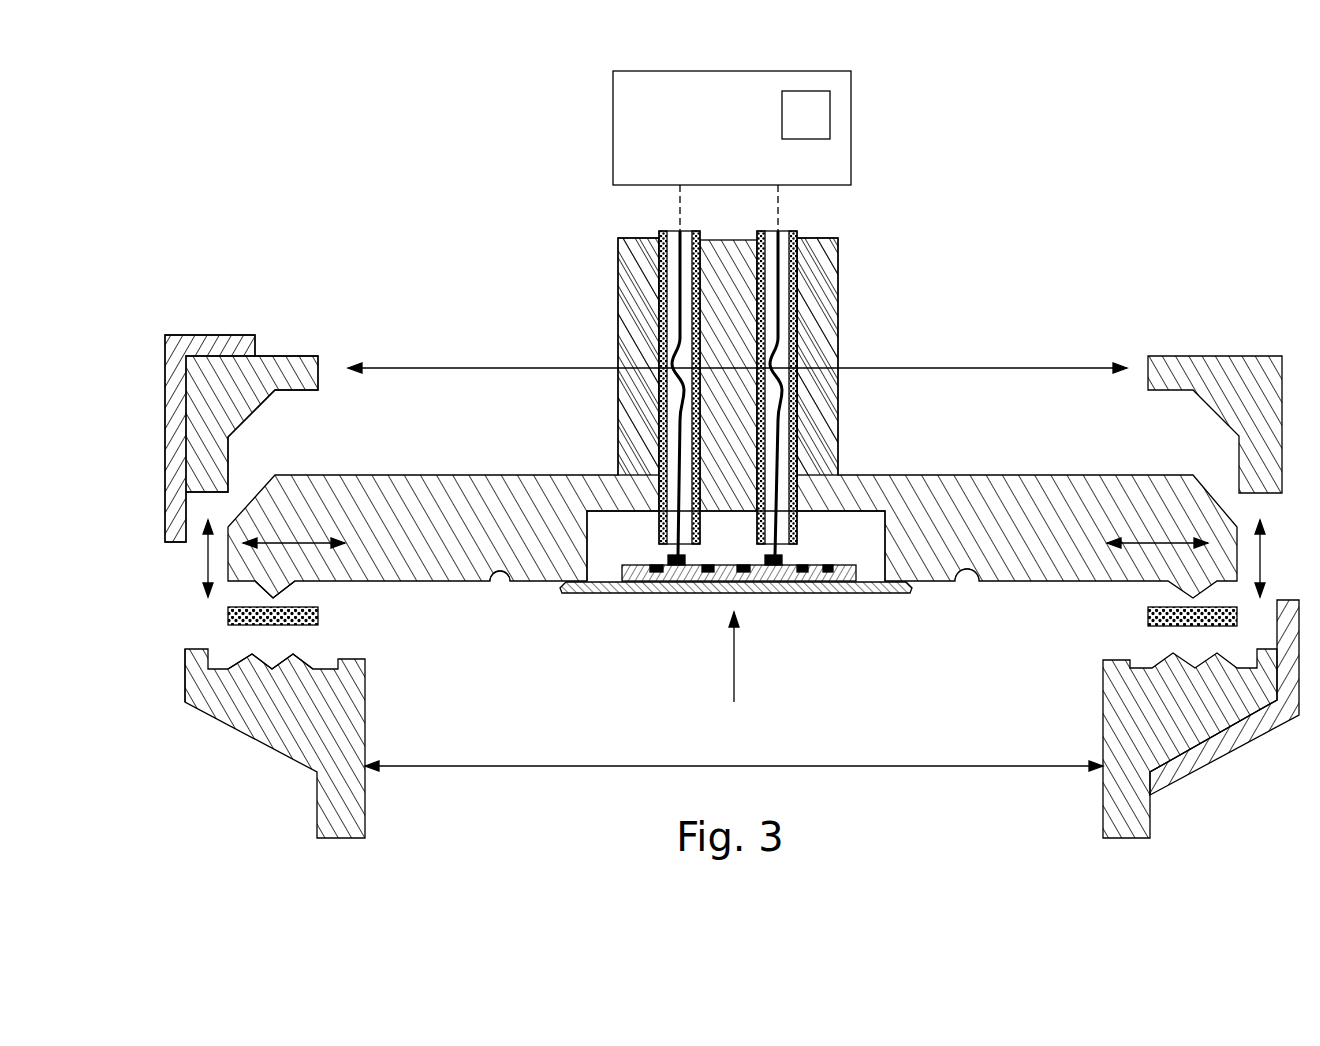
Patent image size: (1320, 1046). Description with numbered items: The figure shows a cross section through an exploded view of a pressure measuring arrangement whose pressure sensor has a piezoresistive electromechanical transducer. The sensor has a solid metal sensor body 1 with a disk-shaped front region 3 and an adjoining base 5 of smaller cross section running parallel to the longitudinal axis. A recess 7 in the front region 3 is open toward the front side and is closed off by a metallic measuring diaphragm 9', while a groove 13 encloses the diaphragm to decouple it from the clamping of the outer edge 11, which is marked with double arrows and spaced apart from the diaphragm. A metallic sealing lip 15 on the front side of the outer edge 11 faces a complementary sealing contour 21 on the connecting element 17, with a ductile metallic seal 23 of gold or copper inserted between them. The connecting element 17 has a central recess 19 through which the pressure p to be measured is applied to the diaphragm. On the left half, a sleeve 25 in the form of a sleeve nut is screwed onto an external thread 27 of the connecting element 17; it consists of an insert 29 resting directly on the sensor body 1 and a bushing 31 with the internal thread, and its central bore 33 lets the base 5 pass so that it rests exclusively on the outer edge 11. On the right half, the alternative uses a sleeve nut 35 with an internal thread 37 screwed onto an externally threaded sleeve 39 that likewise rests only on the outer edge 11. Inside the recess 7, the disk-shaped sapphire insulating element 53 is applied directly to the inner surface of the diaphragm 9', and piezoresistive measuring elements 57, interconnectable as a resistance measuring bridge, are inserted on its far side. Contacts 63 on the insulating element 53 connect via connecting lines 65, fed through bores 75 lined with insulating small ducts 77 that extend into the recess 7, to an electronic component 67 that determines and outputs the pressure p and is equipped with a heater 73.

The sensor body 1 is at (399, 303).
The front region 3 is at (456, 500).
The base 5 is at (628, 385).
The recess 7 is at (596, 548).
The measuring diaphragm 9' is at (739, 619).
The outer edge 11 is at (300, 540).
The groove 13 is at (500, 584).
The sealing lip 15 is at (280, 590).
The connecting element 17 is at (348, 722).
The central recess 19 is at (734, 755).
The sealing contour 21 is at (324, 653).
The seal 23 is at (228, 614).
The sleeve 25 is at (209, 310).
The external thread 27 is at (185, 677).
The insert 29 is at (300, 380).
The bushing 31 is at (178, 412).
The central bore 33 is at (1003, 365).
The sleeve nut 35 is at (1228, 745).
The internal thread 37 is at (1277, 622).
The sleeve 39 is at (1204, 360).
The insulating element 53 is at (678, 594).
The measuring elements 57 is at (653, 565).
The contacts 63 is at (668, 556).
The connecting lines 65 is at (673, 362).
The electronic component 67 is at (642, 122).
The heater 73 is at (820, 127).
The bores 75 is at (678, 397).
The small ducts 77 is at (668, 303).
The pressure p is at (734, 672).